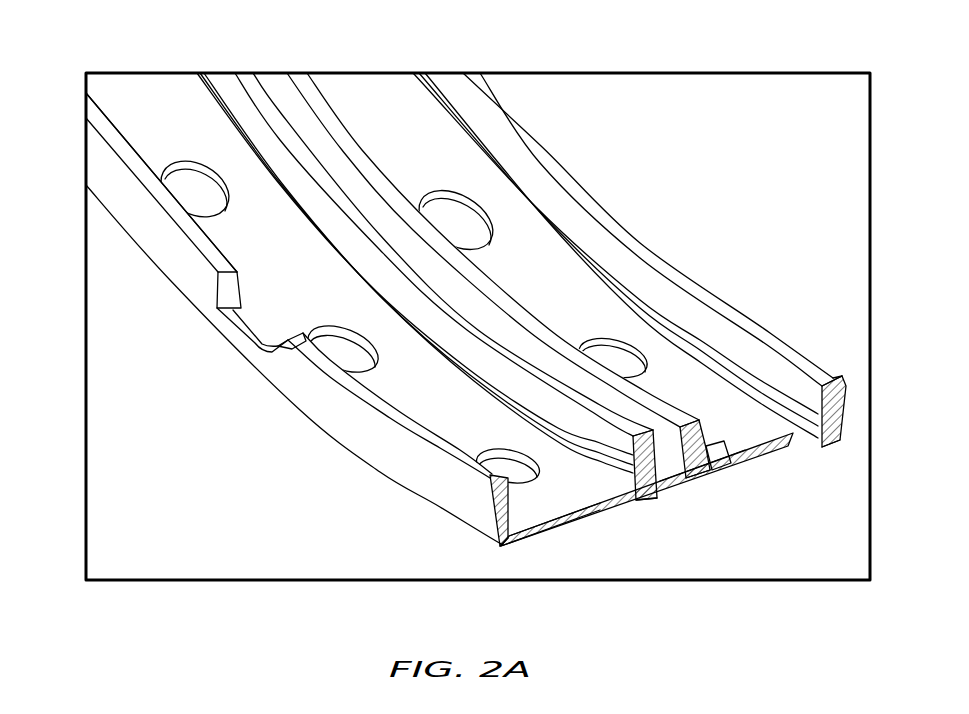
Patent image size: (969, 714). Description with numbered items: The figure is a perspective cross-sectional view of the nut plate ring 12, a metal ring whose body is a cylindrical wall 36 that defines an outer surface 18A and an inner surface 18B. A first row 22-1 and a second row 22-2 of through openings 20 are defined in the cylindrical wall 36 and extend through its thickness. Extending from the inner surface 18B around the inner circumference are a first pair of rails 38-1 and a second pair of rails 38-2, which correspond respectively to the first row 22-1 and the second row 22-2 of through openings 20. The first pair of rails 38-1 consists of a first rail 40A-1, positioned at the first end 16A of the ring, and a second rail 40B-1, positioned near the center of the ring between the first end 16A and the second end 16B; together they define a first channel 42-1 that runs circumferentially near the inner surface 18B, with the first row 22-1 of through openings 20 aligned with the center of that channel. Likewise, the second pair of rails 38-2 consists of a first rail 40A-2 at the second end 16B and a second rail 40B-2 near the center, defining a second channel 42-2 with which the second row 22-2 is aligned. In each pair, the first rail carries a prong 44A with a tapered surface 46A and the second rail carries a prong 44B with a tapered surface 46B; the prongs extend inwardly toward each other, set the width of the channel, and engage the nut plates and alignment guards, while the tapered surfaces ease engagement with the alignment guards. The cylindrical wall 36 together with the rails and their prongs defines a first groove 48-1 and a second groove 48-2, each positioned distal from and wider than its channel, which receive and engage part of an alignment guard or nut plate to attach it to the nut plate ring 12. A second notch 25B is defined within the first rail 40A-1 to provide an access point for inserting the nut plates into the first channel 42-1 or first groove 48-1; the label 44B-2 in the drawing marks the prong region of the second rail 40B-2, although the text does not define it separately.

The nut plate ring 12 is at (620, 168).
The first end 16A is at (398, 466).
The second end 16B is at (661, 262).
The outer surface 18A is at (622, 500).
The inner surface 18B is at (720, 400).
The through openings 20 is at (158, 172).
The first row 22-1 is at (171, 135).
The second row 22-2 is at (416, 163).
The second notch 25B is at (236, 299).
The cylindrical wall 36 is at (662, 470).
The first pair of rails 38-1 is at (430, 485).
The second pair of rails 38-2 is at (630, 222).
The first rail 40A-1 is at (370, 447).
The first rail 40A-2 is at (808, 357).
The second rail 40B-1 is at (668, 462).
The second rail 40B-2 is at (708, 470).
The first channel 42-1 is at (243, 172).
The second channel 42-2 is at (447, 160).
The prong 44A is at (823, 447).
The prong 44B is at (793, 458).
The rib hook 44B-2 is at (747, 463).
The tapered surface 46A is at (848, 415).
The tapered surface 46B is at (590, 507).
The first groove 48-1 is at (572, 513).
The second groove 48-2 is at (731, 486).